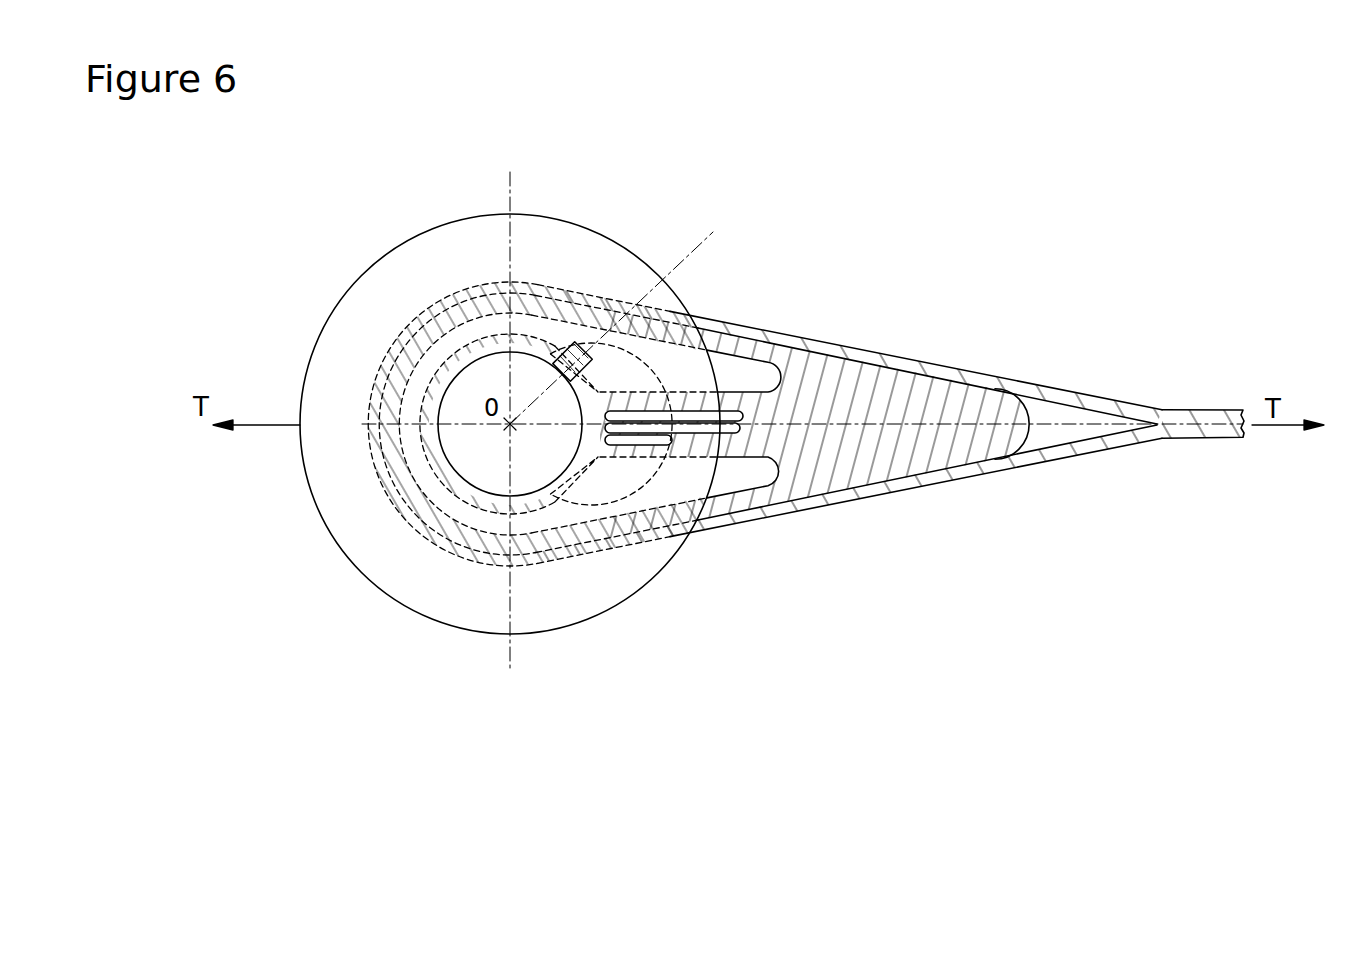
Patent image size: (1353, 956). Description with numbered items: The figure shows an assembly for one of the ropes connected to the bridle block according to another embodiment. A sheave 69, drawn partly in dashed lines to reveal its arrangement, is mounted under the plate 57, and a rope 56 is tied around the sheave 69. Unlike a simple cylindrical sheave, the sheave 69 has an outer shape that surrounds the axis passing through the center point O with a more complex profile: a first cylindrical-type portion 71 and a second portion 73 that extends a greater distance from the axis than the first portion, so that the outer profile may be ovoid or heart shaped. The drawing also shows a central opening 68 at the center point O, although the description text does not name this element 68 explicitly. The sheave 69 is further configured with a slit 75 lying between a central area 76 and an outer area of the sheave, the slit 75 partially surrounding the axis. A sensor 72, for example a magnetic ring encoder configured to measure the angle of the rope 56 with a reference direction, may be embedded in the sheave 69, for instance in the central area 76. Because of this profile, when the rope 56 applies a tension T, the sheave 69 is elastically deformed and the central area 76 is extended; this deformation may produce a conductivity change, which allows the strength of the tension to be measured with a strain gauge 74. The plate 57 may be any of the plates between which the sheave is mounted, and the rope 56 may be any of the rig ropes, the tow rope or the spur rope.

The rope 56 is at (1132, 410).
The plate 57 is at (573, 241).
The central bore 68 is at (488, 473).
The sheave 69 is at (843, 380).
The first cylindrical-type portion 71 is at (388, 483).
The sensor 72 is at (593, 354).
The second portion 73 is at (843, 470).
The strain gauge 74 is at (697, 440).
The slit 75 is at (625, 498).
The central area 76 is at (457, 357).